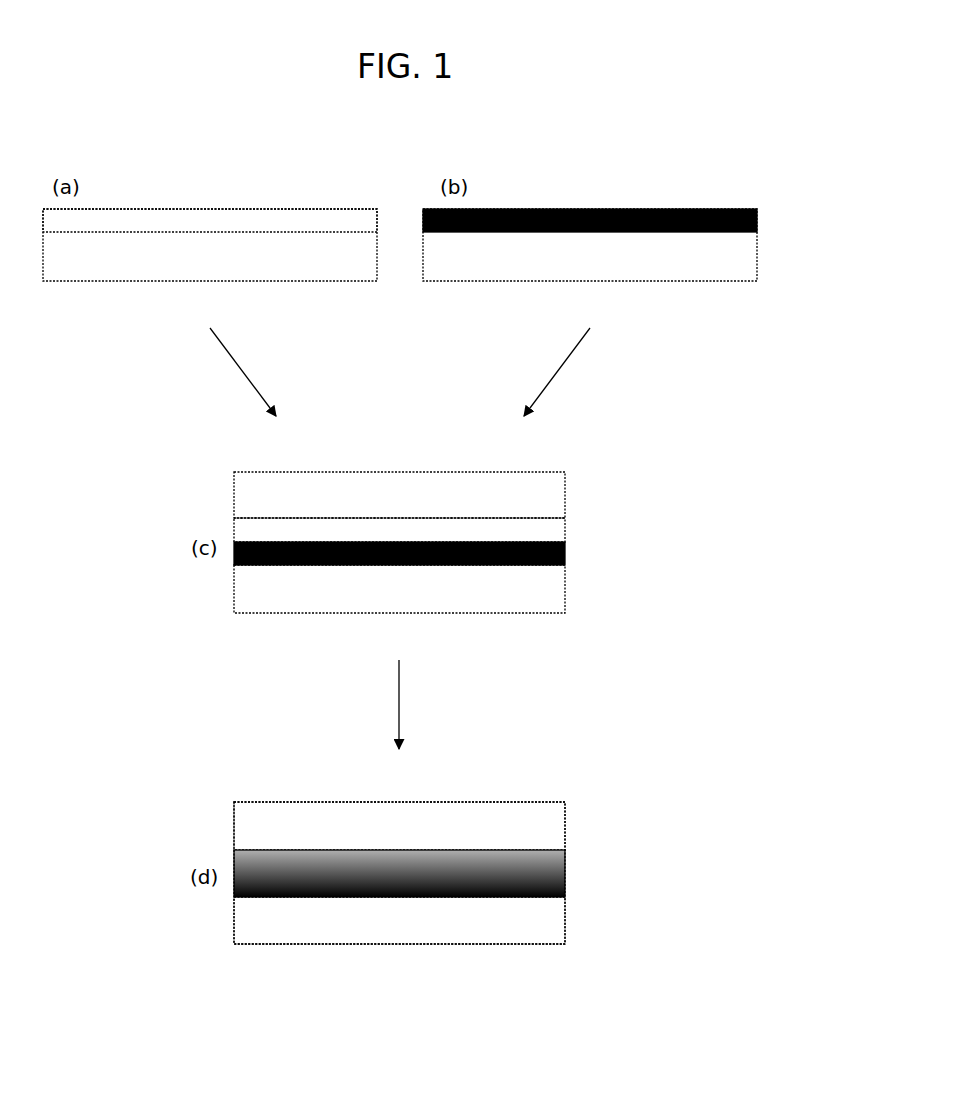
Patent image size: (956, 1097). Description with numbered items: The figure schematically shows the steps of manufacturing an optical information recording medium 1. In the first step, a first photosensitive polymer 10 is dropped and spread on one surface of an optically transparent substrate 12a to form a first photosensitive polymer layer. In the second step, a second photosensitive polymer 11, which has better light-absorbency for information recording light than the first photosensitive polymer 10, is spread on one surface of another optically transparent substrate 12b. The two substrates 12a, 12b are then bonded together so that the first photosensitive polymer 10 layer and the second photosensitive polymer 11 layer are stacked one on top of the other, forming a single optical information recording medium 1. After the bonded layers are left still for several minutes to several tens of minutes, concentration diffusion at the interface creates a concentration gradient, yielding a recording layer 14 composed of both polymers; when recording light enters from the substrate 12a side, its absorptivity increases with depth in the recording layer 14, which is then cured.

The optical information recording medium 1 is at (381, 958).
The first photosensitive polymer 10 is at (190, 213).
The second photosensitive polymer 11 is at (550, 212).
The optically transparent substrate 12a is at (243, 274).
The optically transparent substrate 12b is at (620, 274).
The recording layer 14 is at (567, 876).